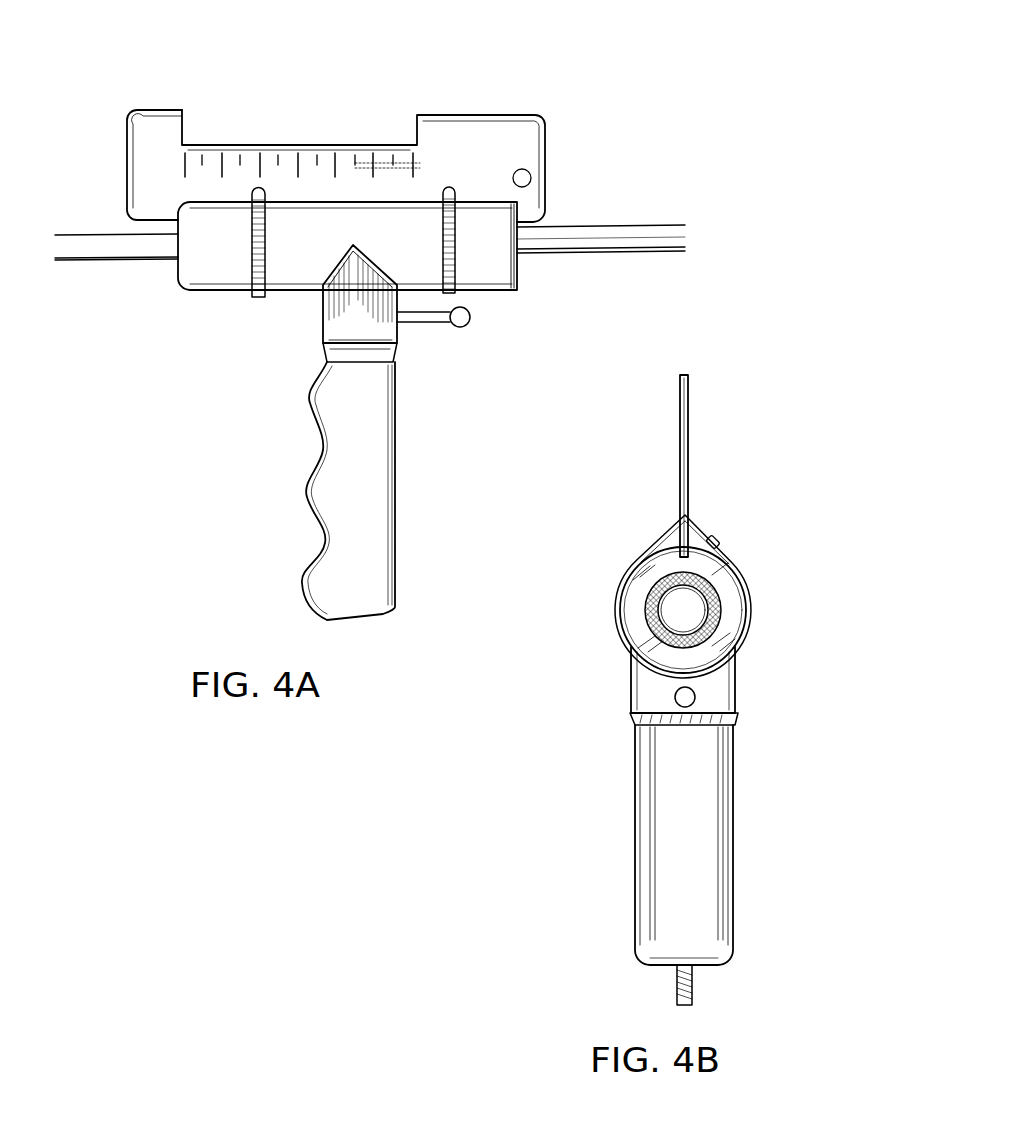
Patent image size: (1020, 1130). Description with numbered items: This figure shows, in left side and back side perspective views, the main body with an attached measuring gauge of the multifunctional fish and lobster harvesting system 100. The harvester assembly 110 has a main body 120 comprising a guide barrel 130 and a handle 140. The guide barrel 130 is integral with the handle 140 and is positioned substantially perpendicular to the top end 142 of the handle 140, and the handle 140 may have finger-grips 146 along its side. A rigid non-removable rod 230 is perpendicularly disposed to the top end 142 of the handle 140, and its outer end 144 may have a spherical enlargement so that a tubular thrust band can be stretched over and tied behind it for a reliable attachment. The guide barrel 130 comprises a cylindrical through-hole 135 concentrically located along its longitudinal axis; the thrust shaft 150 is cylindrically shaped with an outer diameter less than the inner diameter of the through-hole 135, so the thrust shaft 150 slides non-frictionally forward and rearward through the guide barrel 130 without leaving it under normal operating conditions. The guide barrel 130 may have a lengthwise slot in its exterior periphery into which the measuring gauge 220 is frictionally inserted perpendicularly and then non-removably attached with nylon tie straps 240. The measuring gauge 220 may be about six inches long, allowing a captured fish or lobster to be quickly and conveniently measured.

In FIG. 4A, the tissue measurement system 100 is at (632, 115).
In FIG. 4B, the tissue measurement system 100 is at (753, 458).
In FIG. 4A, the harvester assembly 110 is at (643, 142).
In FIG. 4B, the harvester assembly 110 is at (762, 485).
In FIG. 4A, the main body 120 is at (262, 385).
In FIG. 4B, the main body 120 is at (575, 745).
In FIG. 4A, the guide barrel 130 is at (187, 272).
In FIG. 4B, the guide barrel 130 is at (635, 610).
In FIG. 4A, the cylindrical through-hole 135 is at (535, 223).
In FIG. 4B, the cylindrical through-hole 135 is at (712, 580).
In FIG. 4A, the handle 140 is at (347, 491).
In FIG. 4B, the handle 140 is at (710, 905).
In FIG. 4A, the top end 142 is at (321, 297).
In FIG. 4B, the top end 142 is at (630, 660).
In FIG. 4A, the outer end 144 is at (465, 328).
In FIG. 4B, the outer end 144 is at (695, 697).
In FIG. 4A, the finger-grips 146 is at (322, 450).
In FIG. 4A, the thrust shaft 150 is at (612, 226).
In FIG. 4B, the thrust shaft 150 is at (690, 607).
In FIG. 4A, the measuring gauge 220 is at (156, 109).
In FIG. 4B, the measuring gauge 220 is at (681, 374).
In FIG. 4A, the rigid non-removable rod 230 is at (657, 224).
In FIG. 4A, the nylon tie straps 240 is at (258, 297).
In FIG. 4B, the nylon tie straps 240 is at (652, 543).